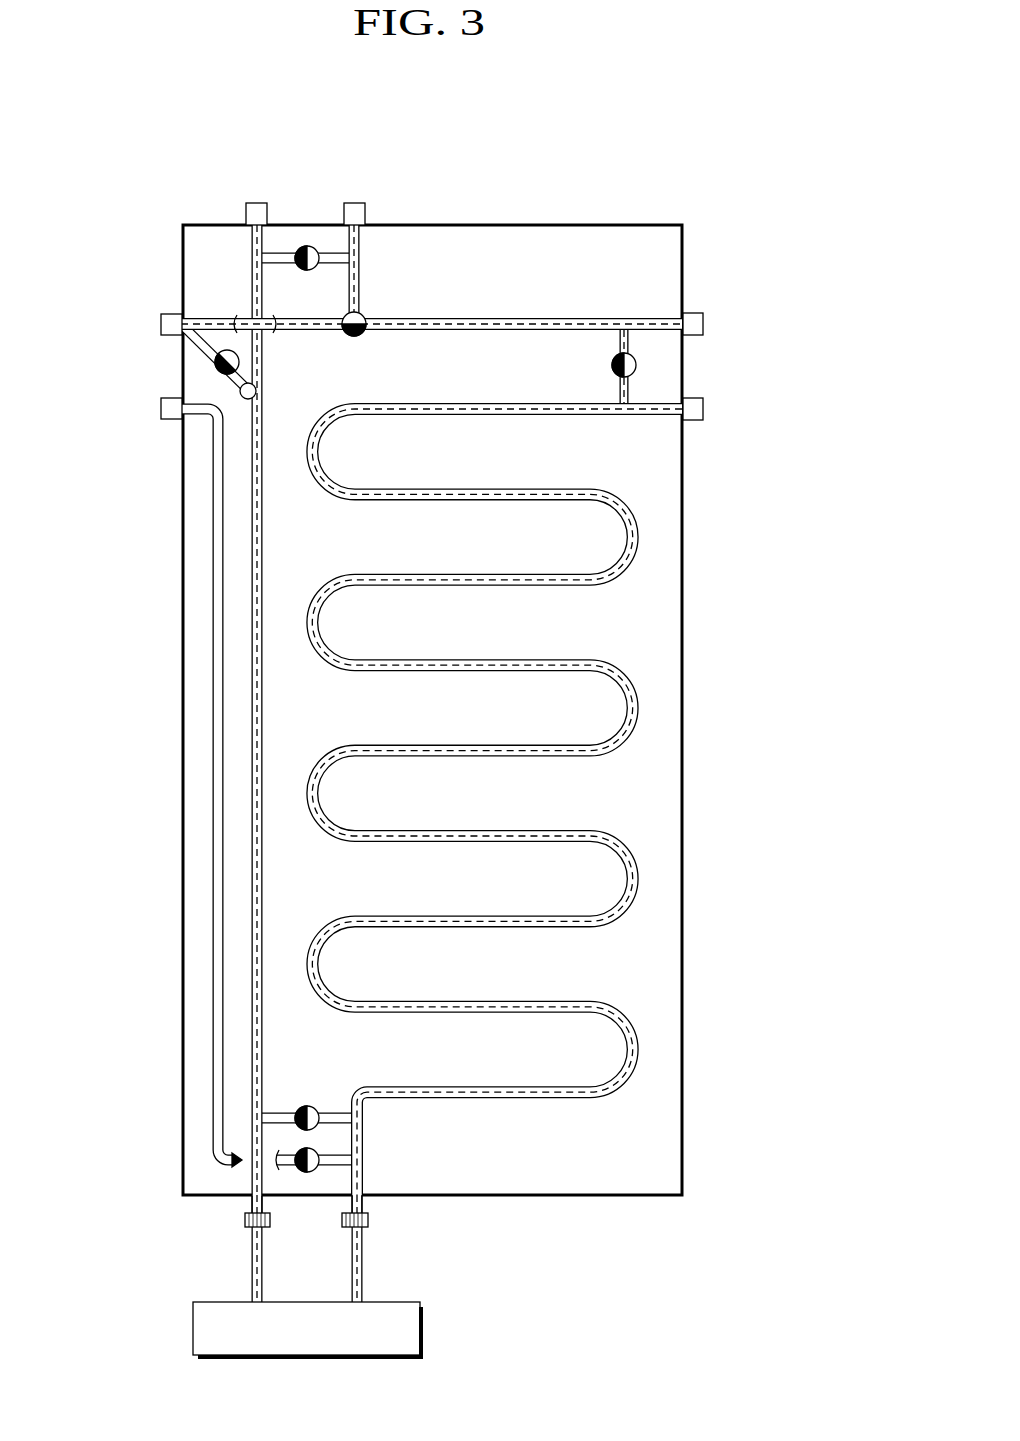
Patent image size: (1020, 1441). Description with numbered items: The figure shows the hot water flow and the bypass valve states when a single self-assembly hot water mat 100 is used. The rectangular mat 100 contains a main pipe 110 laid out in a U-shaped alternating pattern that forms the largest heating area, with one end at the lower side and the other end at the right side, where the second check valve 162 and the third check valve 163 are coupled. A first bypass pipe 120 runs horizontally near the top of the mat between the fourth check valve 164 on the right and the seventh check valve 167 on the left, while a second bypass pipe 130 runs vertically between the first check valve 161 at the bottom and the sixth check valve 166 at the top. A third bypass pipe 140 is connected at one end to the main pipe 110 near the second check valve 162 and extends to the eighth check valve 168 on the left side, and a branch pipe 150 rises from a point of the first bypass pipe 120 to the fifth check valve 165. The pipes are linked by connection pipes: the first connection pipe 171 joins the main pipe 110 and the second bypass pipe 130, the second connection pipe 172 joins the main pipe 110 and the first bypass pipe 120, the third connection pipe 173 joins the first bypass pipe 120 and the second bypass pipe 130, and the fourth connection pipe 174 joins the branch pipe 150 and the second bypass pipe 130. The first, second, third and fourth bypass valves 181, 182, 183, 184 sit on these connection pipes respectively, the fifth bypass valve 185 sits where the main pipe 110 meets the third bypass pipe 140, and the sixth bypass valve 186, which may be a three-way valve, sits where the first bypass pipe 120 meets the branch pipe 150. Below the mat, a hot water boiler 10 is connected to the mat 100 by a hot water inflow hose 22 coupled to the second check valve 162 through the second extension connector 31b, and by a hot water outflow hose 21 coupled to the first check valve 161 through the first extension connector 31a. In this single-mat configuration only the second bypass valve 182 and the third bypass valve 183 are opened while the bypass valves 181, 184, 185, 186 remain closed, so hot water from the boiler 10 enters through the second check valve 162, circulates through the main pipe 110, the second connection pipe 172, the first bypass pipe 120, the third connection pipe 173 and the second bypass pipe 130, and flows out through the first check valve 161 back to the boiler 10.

The self-assembly hot water mat 100 is at (655, 140).
The main pipe 110 is at (572, 831).
The first bypass pipe 120 is at (499, 318).
The second bypass pipe 130 is at (257, 733).
The third bypass pipe 140 is at (213, 647).
The branch pipe 150 is at (360, 262).
The first check valve 161 is at (247, 1203).
The second check valve 162 is at (366, 1203).
The third check valve 163 is at (703, 414).
The fourth check valve 164 is at (703, 322).
The fifth check valve 165 is at (356, 203).
The sixth check valve 166 is at (256, 203).
The seventh check valve 167 is at (161, 323).
The eighth check valve 168 is at (161, 409).
The first connection pipe 171 is at (340, 1108).
The second connection pipe 172 is at (619, 340).
The third connection pipe 173 is at (258, 393).
The fourth connection pipe 174 is at (278, 252).
The first bypass valve 181 is at (303, 1106).
The second bypass valve 182 is at (612, 364).
The third bypass valve 183 is at (241, 358).
The fourth bypass valve 184 is at (310, 247).
The fifth bypass valve 185 is at (300, 1174).
The sixth bypass valve 186 is at (364, 318).
The hot water outflow hose 21 is at (250, 1278).
The hot water inflow hose 22 is at (365, 1278).
The first extension connector 31a is at (246, 1222).
The second extension connector 31b is at (367, 1222).
The hot water boiler 10 is at (423, 1328).